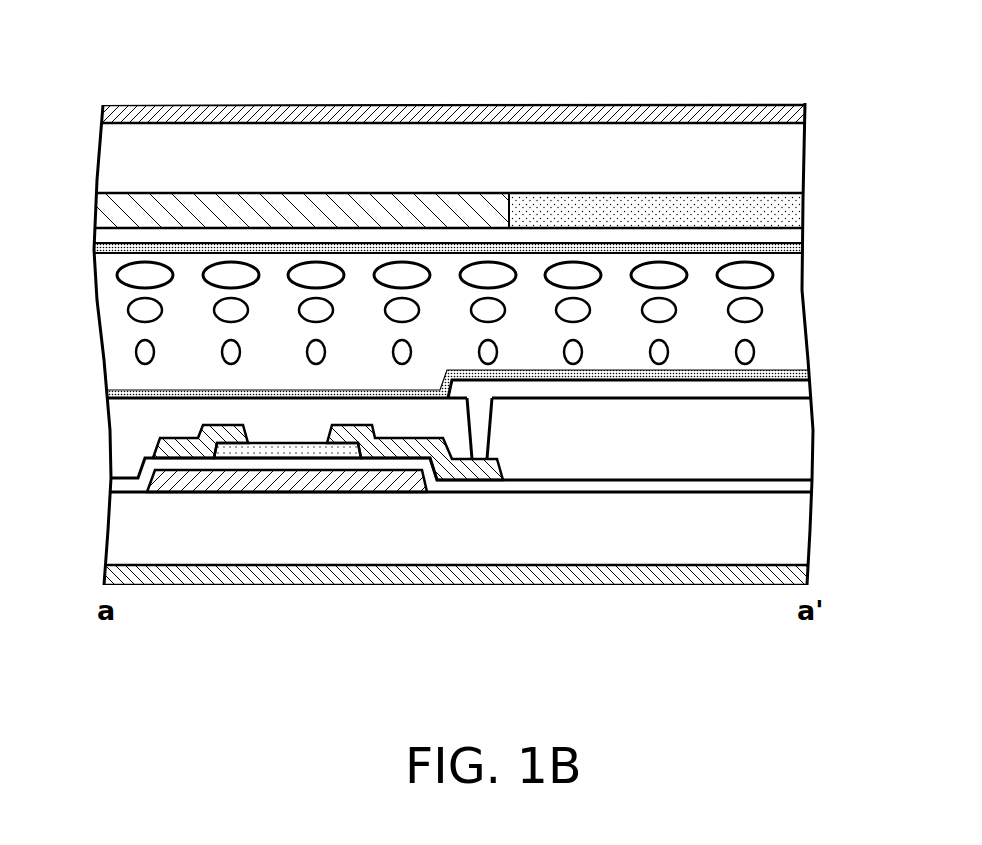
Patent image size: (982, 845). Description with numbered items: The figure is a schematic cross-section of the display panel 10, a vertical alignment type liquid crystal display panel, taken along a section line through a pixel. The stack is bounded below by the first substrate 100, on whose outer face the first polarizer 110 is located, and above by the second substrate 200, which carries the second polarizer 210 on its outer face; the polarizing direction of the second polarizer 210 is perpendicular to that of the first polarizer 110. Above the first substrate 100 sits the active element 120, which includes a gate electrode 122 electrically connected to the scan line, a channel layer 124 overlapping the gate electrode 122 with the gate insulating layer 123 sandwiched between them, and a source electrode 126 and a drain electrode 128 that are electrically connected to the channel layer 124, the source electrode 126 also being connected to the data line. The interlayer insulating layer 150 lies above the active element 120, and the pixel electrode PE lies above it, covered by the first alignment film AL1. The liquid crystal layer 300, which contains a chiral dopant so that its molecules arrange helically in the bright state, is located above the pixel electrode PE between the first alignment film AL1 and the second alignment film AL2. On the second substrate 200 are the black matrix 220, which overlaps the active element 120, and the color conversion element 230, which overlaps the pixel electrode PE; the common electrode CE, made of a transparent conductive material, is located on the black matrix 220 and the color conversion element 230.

The display panel 10 is at (460, 358).
The second polarizer 210 is at (807, 113).
The second substrate 200 is at (793, 158).
The black matrix 220 is at (117, 213).
The color conversion element 230 is at (795, 208).
The common electrode CE is at (792, 237).
The second alignment film AL2 is at (798, 248).
The liquid crystal layer 300 is at (798, 315).
The first alignment film AL1 is at (813, 373).
The pixel electrode PE is at (803, 390).
The interlayer insulating layer 150 is at (125, 440).
The active element 120 is at (325, 565).
The gate electrode 122 is at (300, 485).
The gate insulating layer 123 is at (810, 485).
The channel layer 124 is at (245, 450).
The source electrode 126 is at (188, 440).
The drain electrode 128 is at (347, 437).
The first substrate 100 is at (805, 535).
The first polarizer 110 is at (807, 575).